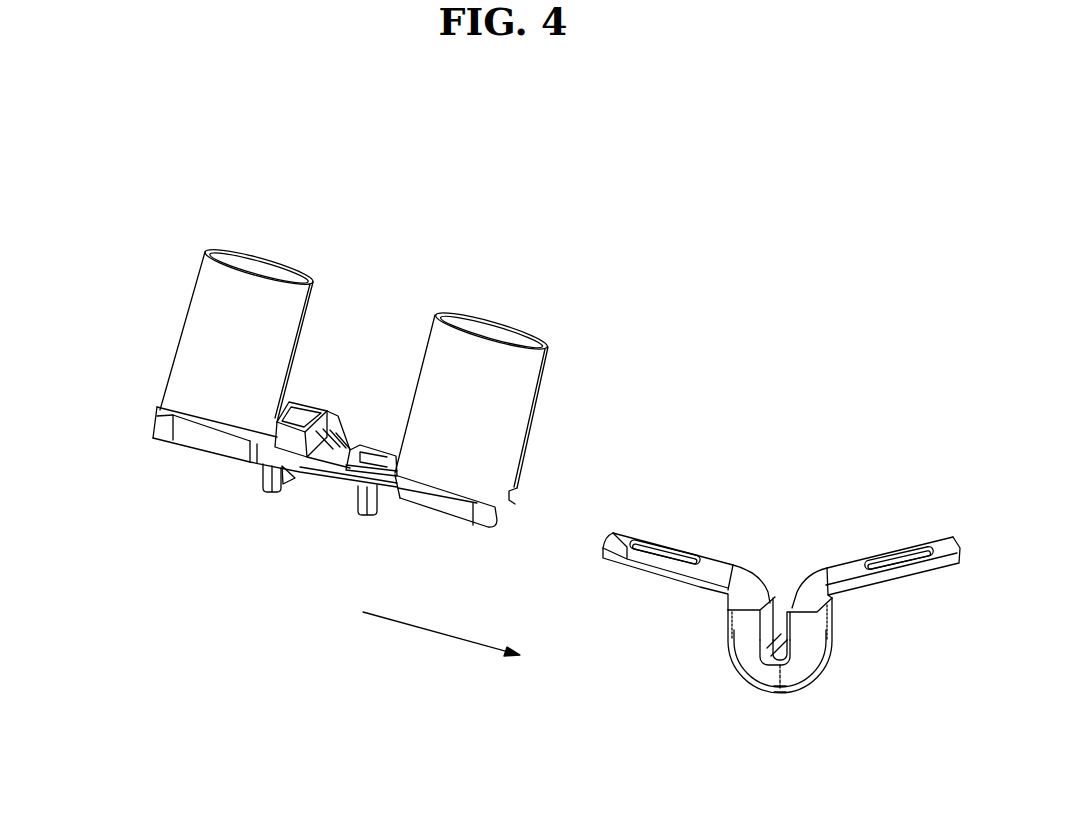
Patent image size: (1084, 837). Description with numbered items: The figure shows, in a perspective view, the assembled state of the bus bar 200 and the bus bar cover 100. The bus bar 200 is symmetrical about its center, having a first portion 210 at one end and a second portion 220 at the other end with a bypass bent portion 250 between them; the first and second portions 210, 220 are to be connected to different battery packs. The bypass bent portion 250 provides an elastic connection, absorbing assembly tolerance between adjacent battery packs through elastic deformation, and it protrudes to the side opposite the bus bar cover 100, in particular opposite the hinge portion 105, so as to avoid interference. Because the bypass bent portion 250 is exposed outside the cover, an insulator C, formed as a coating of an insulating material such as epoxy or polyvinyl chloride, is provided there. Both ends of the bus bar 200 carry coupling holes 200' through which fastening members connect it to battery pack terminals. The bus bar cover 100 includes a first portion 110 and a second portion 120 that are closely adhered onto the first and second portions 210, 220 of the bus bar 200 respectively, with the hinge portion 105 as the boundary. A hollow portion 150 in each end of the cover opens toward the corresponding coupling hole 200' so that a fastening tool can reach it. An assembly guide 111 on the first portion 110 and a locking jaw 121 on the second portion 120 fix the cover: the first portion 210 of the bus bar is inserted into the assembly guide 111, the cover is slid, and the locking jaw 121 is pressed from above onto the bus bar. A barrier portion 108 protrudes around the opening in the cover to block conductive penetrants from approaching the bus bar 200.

The bus bar cover 100 is at (138, 373).
The hollow portion 150 is at (265, 262).
The barrier portion 108 is at (314, 400).
The hinge portion 105 is at (340, 448).
The first portion of the bus bar cover 110 is at (190, 442).
The assembly guide 111 is at (268, 490).
The second portion of the bus bar cover 120 is at (480, 522).
The locking jaw 121 is at (365, 515).
The bus bar 200 is at (765, 695).
The coupling hole 200' is at (773, 522).
The first portion of the bus bar 210 is at (654, 576).
The second portion of the bus bar 220 is at (903, 574).
The bypass bent portion 250 is at (795, 692).
The insulator C is at (830, 642).